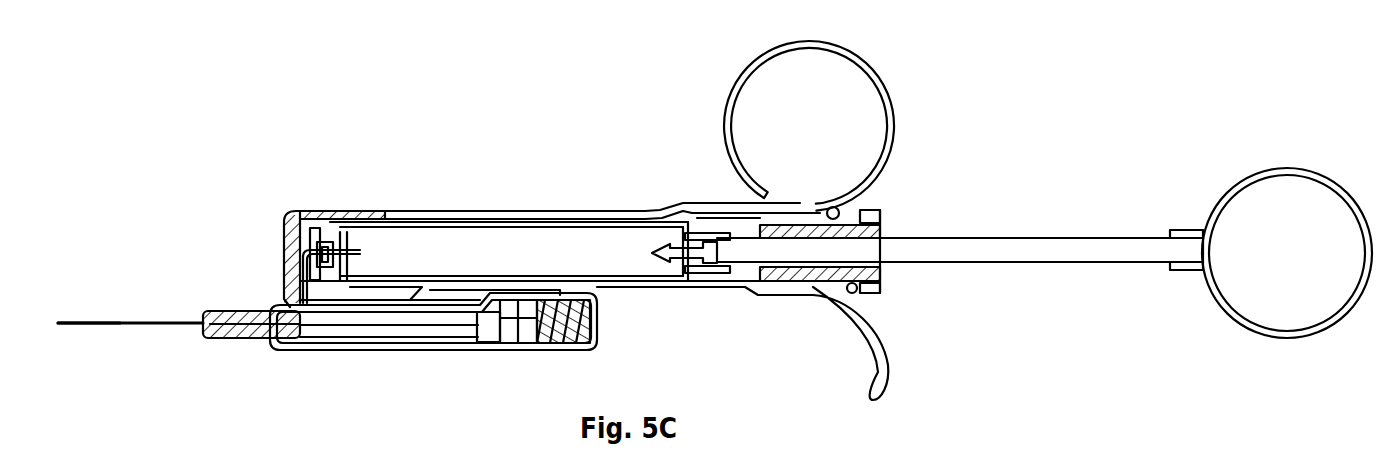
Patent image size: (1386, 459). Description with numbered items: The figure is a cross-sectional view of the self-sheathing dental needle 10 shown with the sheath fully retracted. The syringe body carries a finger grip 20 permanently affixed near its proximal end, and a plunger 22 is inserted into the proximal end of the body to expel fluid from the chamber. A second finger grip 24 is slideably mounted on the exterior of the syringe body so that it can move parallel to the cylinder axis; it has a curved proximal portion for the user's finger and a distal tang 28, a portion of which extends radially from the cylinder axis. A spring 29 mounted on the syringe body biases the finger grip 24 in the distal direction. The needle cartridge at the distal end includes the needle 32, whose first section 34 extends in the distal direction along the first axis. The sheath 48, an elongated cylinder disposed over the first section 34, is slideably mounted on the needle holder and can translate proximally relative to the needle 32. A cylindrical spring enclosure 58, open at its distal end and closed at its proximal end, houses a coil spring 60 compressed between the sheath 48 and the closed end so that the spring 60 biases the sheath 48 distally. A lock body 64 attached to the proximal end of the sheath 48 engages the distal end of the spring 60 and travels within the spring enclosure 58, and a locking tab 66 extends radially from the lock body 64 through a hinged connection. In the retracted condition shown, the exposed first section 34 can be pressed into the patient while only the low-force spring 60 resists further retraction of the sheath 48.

The self-sheathing dental needle 10 is at (290, 170).
The finger grip 20 is at (895, 121).
The plunger 22 is at (1003, 236).
The second finger grip 24 is at (888, 352).
The distal tang 28 is at (397, 310).
The spring 29 is at (856, 208).
The needle 32 is at (98, 322).
The first section 34 is at (150, 326).
The sheath 48 is at (208, 338).
The spring enclosure 58 is at (422, 348).
The coil spring 60 is at (599, 327).
The lock body 64 is at (493, 338).
The locking tab 66 is at (487, 290).